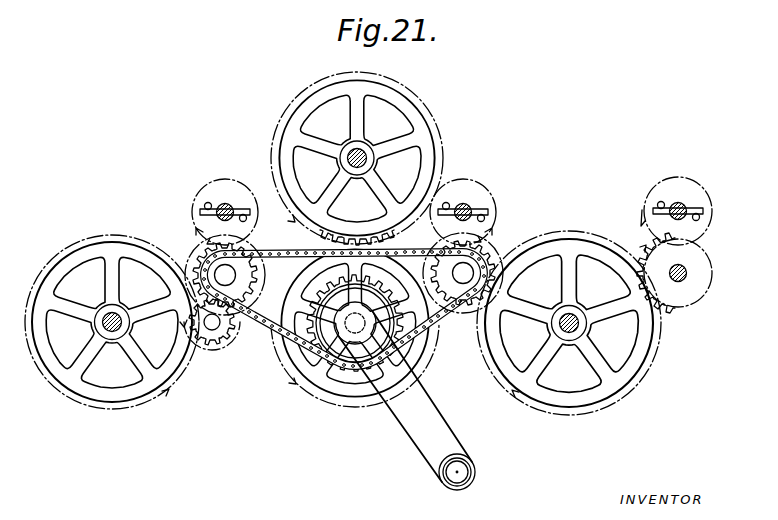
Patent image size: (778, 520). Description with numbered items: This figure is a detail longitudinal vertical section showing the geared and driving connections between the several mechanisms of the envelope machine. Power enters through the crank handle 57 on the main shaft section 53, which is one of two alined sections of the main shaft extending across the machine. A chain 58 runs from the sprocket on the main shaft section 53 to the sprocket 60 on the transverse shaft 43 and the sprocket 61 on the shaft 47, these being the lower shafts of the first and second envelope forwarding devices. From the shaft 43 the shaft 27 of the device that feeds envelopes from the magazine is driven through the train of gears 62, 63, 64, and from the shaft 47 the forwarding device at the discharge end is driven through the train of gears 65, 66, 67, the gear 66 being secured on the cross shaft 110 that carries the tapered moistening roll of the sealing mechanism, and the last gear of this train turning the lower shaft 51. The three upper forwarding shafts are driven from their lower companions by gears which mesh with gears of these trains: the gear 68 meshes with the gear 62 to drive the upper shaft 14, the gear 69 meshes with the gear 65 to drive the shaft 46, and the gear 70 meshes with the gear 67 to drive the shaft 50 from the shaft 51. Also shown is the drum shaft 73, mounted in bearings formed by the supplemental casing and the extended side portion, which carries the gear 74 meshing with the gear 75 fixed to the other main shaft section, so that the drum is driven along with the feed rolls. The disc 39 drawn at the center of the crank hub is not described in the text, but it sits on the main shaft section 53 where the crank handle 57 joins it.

The transverse shaft 14 is at (224, 210).
The shaft 27 is at (103, 326).
The crank disc 39 is at (355, 323).
The transverse shaft 43 is at (232, 276).
The shaft 46 is at (466, 212).
The shaft 47 is at (451, 309).
The shaft 50 is at (682, 209).
The shaft 51 is at (685, 278).
The main shaft section 53 is at (352, 334).
The crank handle 57 is at (424, 429).
The chain 58 is at (269, 331).
The sprocket 60 is at (240, 262).
The sprocket 61 is at (455, 268).
The gear 62 is at (206, 256).
The gear 63 is at (208, 346).
The gear 64 is at (185, 320).
The gear 65 is at (492, 260).
The gear 66 is at (497, 292).
The gear 67 is at (674, 273).
The gear 68 is at (222, 180).
The gear 69 is at (482, 190).
The gear 70 is at (668, 190).
The drum shaft 73 is at (361, 153).
The gear 74 is at (355, 235).
The gear 75 is at (302, 300).
The cross shaft 110 is at (569, 341).